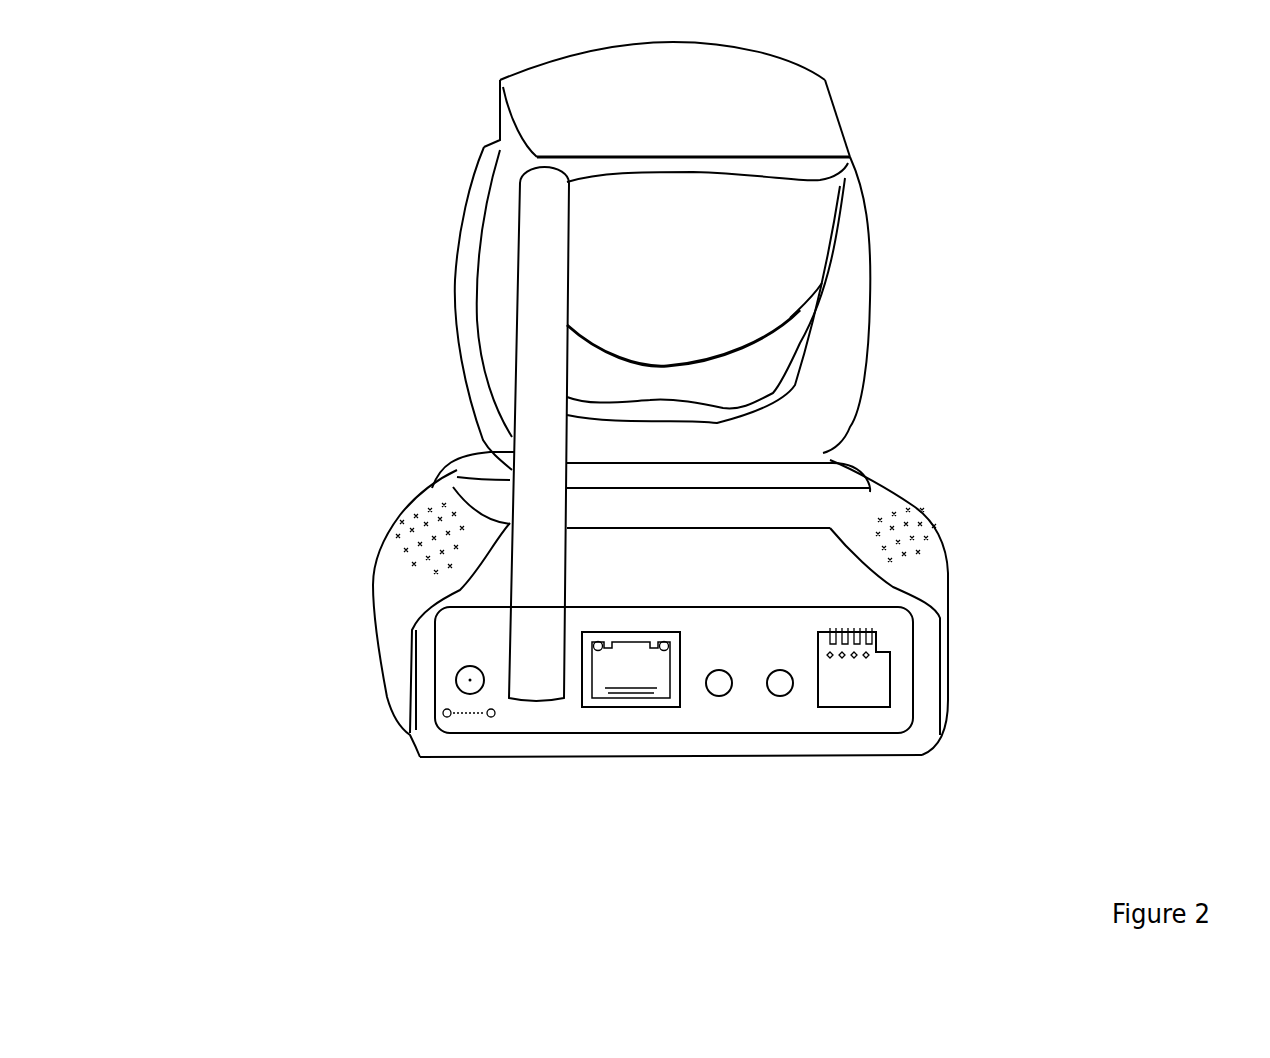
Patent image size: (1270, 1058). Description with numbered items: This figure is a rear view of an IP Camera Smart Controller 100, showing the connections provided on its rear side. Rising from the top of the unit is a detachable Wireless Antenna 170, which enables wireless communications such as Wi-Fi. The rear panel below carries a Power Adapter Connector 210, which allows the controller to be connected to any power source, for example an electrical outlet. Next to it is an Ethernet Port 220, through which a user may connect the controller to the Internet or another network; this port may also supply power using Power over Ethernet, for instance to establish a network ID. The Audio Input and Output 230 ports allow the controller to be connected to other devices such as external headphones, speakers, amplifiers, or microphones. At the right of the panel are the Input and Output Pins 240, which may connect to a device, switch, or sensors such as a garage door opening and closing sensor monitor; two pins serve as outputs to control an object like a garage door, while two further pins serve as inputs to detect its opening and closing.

The IP Camera Smart Controller 100 is at (784, 399).
The Wireless Antenna 170 is at (528, 177).
The Power Adapter Connector 210 is at (466, 702).
The Ethernet Port 220 is at (623, 680).
The Audio Input and Output 230 is at (745, 706).
The Input and Output Pins 240 is at (877, 655).